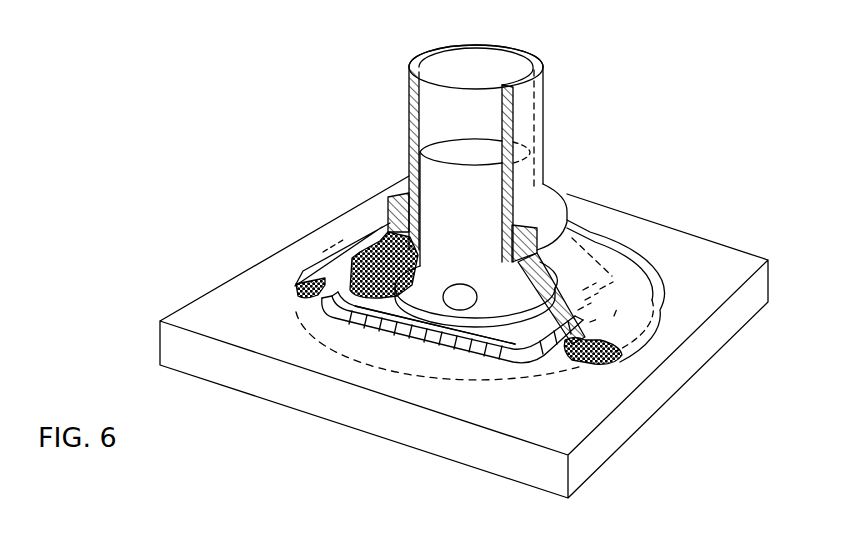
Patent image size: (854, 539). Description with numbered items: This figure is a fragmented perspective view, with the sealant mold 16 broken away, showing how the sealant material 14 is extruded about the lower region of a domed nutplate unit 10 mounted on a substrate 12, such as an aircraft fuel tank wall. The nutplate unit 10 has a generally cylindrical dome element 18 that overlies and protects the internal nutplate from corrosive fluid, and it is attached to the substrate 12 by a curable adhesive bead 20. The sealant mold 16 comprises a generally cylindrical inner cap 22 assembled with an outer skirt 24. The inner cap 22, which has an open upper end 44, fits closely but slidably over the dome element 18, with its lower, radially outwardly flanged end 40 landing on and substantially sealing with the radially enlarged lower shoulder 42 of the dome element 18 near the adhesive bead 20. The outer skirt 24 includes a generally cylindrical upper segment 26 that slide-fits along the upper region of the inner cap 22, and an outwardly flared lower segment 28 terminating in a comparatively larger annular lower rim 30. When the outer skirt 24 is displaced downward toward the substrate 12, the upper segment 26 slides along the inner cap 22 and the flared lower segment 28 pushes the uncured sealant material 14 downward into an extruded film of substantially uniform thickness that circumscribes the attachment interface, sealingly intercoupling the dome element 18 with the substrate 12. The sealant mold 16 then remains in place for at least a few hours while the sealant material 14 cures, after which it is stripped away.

The domed nutplate unit 10 is at (413, 303).
The substrate 12 is at (687, 262).
The sealant material 14 is at (302, 292).
The sealant mold 16 is at (560, 142).
The dome element 18 is at (468, 182).
The adhesive bead 20 is at (490, 353).
The inner cap 22 is at (537, 100).
The outer skirt 24 is at (380, 188).
The upper segment 26 is at (567, 218).
The flared lower segment 28 is at (602, 243).
The lower rim 30 is at (650, 322).
The flanged end 40 is at (503, 267).
The lower shoulder 42 is at (423, 277).
The open upper end 44 is at (490, 44).